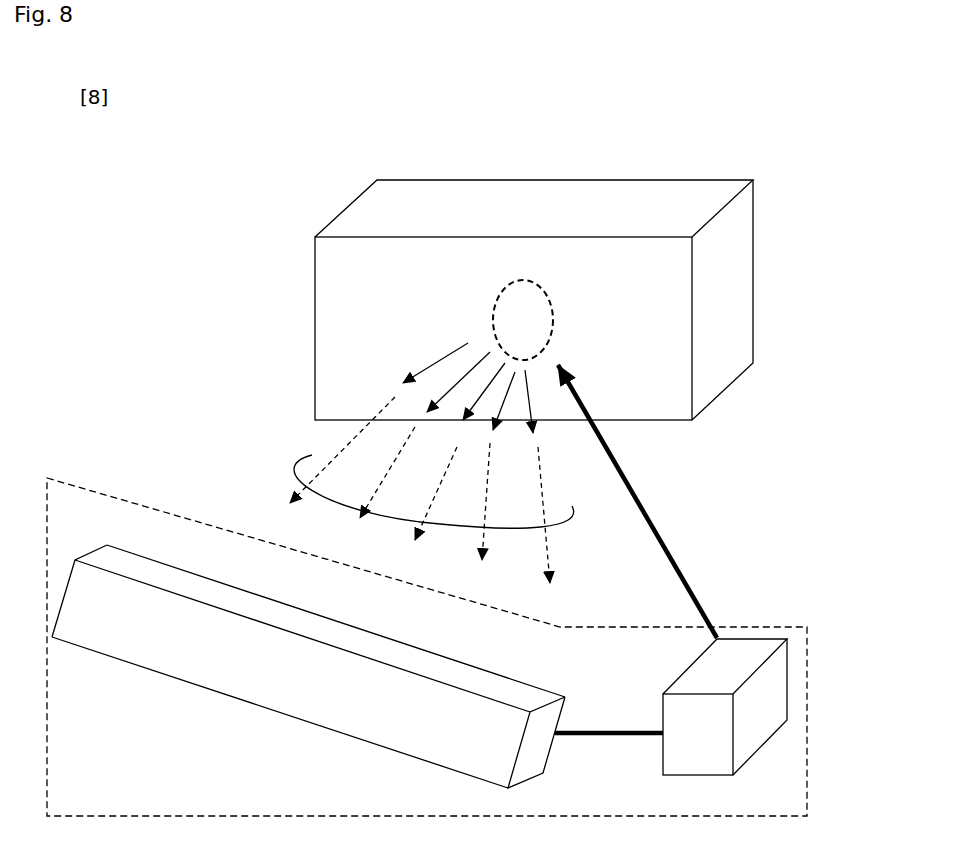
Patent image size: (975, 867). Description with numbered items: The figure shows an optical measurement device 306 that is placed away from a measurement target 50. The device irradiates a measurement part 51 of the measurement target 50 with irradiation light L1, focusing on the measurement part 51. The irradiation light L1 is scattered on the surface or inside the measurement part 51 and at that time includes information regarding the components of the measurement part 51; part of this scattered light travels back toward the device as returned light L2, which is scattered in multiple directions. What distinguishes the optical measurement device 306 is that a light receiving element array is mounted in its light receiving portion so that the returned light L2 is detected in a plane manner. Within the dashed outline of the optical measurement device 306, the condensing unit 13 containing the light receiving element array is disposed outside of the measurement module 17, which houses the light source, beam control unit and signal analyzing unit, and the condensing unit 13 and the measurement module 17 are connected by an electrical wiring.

The measurement target 50 is at (458, 176).
The measurement part 51 is at (493, 312).
The returned light L2 is at (286, 460).
The irradiation light L1 is at (668, 546).
The condensing unit 13 is at (248, 703).
The measurement module 17 is at (672, 778).
The optical measurement device 306 is at (808, 713).